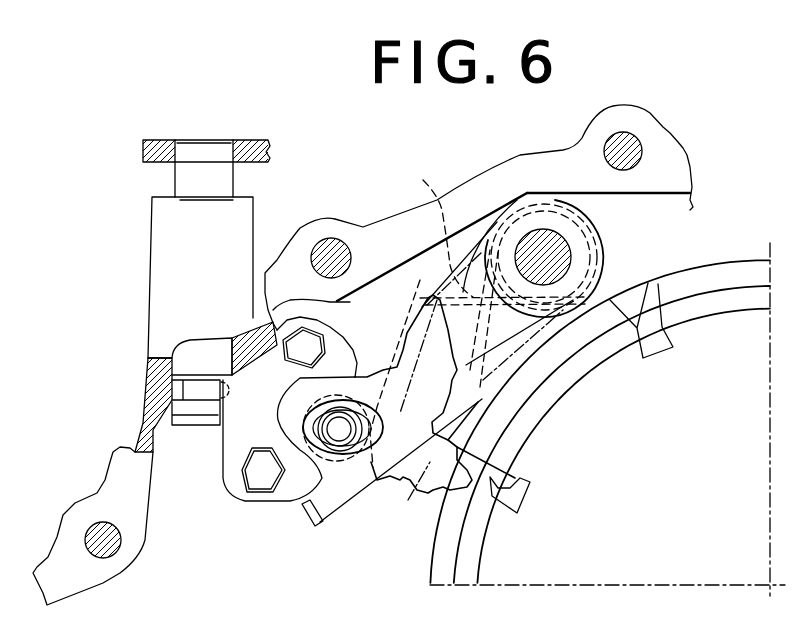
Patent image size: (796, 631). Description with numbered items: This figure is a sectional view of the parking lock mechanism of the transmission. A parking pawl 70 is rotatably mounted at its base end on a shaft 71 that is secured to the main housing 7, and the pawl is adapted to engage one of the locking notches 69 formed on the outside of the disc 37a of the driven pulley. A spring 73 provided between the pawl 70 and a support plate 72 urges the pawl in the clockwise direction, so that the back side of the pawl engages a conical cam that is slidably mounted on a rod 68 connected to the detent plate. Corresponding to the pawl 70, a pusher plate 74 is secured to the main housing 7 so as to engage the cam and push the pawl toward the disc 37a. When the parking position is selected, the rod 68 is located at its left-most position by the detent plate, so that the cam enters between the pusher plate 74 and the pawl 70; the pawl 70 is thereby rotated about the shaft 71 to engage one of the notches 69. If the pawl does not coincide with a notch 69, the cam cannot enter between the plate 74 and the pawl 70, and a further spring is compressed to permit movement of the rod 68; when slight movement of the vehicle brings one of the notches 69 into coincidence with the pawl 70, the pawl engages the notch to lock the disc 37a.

The main housing 7 is at (552, 160).
The disc 37a is at (742, 262).
The rod 68 is at (339, 432).
The locking notches 69 is at (502, 477).
The parking pawl 70 is at (443, 493).
The shaft 71 is at (567, 257).
The support plate 72 is at (314, 515).
The spring 73 is at (441, 192).
The pusher plate 74 is at (263, 367).